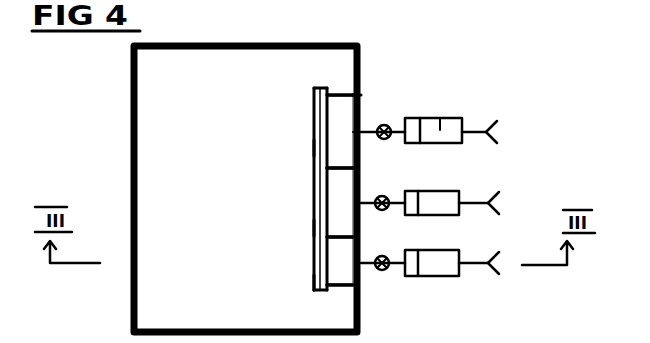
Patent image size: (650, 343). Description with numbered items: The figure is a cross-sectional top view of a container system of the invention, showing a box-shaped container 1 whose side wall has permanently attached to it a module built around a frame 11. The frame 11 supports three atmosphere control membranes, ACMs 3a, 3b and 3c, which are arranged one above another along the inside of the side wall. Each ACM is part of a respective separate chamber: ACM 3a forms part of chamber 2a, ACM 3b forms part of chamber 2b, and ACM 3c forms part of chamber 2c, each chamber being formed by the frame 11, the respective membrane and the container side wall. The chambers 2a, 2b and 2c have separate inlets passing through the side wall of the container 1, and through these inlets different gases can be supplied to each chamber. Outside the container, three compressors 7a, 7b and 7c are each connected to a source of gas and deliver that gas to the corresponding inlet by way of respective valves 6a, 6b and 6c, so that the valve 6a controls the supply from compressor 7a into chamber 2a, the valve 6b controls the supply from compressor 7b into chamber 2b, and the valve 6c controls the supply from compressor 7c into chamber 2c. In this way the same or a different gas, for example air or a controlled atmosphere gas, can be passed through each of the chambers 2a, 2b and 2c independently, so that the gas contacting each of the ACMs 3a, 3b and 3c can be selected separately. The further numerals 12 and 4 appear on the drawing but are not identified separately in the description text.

The box-shaped container 1 is at (362, 74).
The frame 11 is at (364, 88).
The passage opening 12 is at (364, 118).
The carrier plate 4 is at (312, 166).
The chamber 2a is at (342, 118).
The chamber 2b is at (338, 208).
The chamber 2c is at (338, 262).
The ACM 3a is at (312, 148).
The ACM 3b is at (312, 228).
The ACM 3c is at (307, 283).
The valve 6a is at (386, 140).
The valve 6b is at (381, 211).
The valve 6c is at (381, 272).
The compressor 7a is at (443, 136).
The compressor 7b is at (437, 207).
The compressor 7c is at (440, 272).